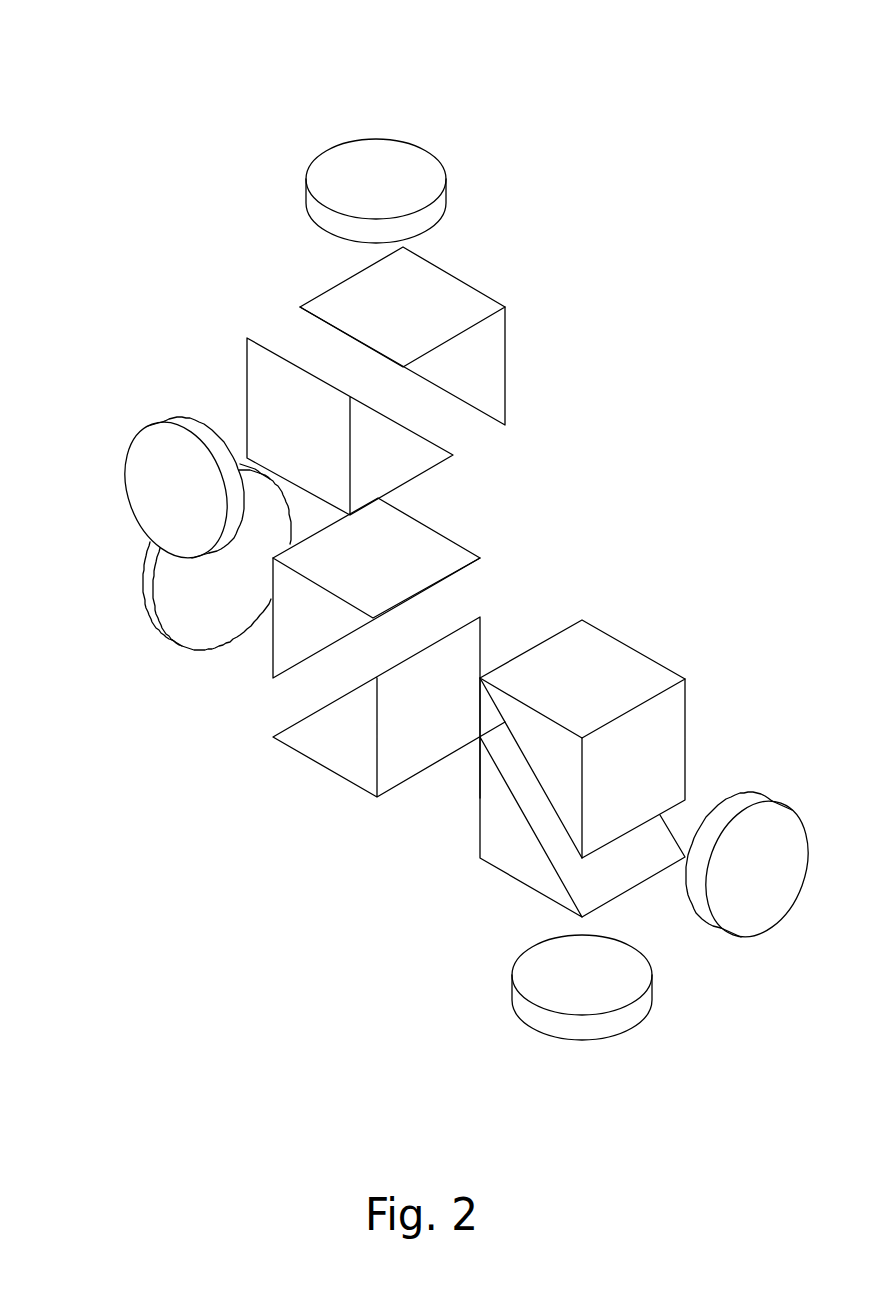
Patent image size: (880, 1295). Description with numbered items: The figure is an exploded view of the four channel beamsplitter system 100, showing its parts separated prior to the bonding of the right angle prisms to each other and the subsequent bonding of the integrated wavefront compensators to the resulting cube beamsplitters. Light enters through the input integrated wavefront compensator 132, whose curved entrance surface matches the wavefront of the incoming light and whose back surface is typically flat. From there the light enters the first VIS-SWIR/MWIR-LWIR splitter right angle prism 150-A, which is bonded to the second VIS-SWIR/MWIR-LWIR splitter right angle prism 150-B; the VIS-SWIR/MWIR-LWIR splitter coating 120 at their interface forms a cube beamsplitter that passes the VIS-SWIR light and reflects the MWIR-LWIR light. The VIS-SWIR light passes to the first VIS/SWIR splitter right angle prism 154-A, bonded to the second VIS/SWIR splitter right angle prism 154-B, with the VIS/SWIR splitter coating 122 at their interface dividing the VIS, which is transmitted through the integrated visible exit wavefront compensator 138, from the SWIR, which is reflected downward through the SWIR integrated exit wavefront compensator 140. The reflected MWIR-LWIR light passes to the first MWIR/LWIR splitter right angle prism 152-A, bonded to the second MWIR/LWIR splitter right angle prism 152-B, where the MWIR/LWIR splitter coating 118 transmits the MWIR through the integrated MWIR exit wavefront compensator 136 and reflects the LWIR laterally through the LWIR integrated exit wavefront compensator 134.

The four channel beamsplitter system 100 is at (590, 55).
The MWIR/LWIR splitter coating 118 is at (433, 441).
The VIS-SWIR/MWIR-LWIR splitter coating 120 is at (417, 598).
The VIS/SWIR splitter coating 122 is at (662, 853).
The input integrated wavefront compensator 132 is at (178, 575).
The LWIR integrated exit wavefront compensator 134 is at (148, 432).
The integrated MWIR exit wavefront compensator 136 is at (342, 158).
The integrated visible exit wavefront compensator 138 is at (768, 800).
The SWIR integrated exit wavefront compensator 140 is at (540, 1015).
The first VIS-SWIR/MWIR-LWIR splitter right angle prism 150-A is at (285, 660).
The second VIS-SWIR/MWIR-LWIR splitter right angle prism 150-B is at (360, 775).
The first MWIR/LWIR splitter right angle prism 152-A is at (258, 365).
The second MWIR/LWIR splitter right angle prism 152-B is at (462, 290).
The first VIS/SWIR splitter right angle prism 154-A is at (553, 887).
The second VIS/SWIR splitter right angle prism 154-B is at (663, 677).